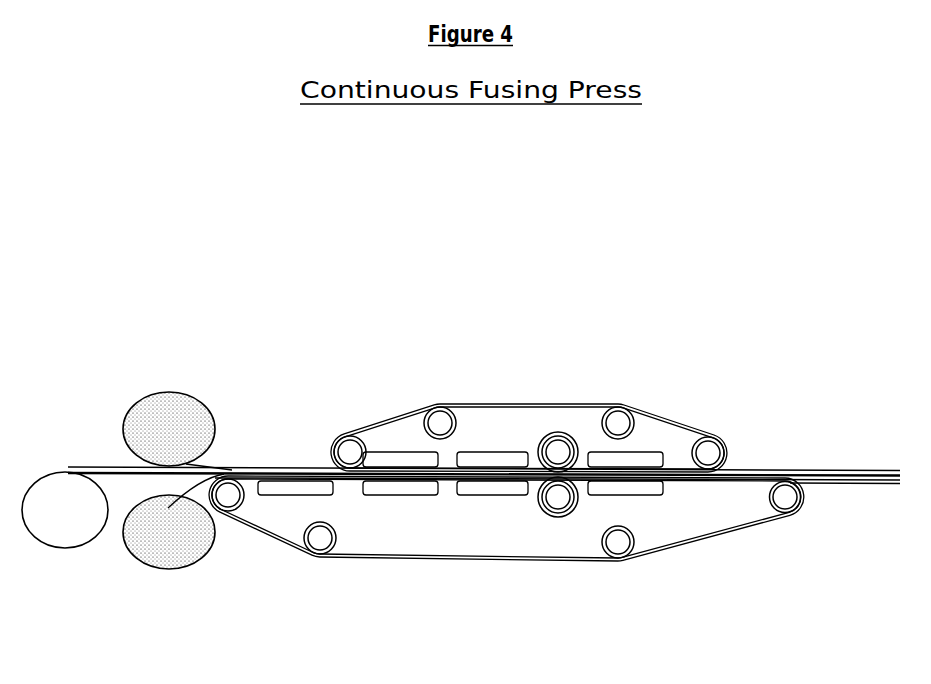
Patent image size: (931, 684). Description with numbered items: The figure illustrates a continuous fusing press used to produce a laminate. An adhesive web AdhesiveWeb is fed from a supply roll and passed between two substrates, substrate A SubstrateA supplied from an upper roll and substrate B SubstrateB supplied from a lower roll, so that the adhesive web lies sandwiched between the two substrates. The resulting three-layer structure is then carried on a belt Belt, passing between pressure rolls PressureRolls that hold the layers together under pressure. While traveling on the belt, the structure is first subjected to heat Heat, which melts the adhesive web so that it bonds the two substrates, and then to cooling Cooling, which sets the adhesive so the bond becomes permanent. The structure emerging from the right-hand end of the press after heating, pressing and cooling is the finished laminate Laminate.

The substrate A SubstrateA is at (185, 392).
The substrate B SubstrateB is at (185, 572).
The adhesive web AdhesiveWeb is at (58, 548).
The laminate Laminate is at (750, 468).
The belt Belt is at (783, 588).
The pressure rolls PressureRolls is at (548, 513).
The heat Heat is at (465, 506).
The cooling Cooling is at (647, 450).